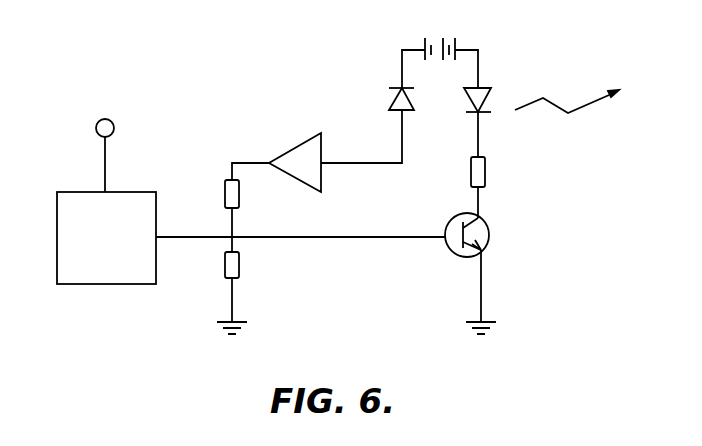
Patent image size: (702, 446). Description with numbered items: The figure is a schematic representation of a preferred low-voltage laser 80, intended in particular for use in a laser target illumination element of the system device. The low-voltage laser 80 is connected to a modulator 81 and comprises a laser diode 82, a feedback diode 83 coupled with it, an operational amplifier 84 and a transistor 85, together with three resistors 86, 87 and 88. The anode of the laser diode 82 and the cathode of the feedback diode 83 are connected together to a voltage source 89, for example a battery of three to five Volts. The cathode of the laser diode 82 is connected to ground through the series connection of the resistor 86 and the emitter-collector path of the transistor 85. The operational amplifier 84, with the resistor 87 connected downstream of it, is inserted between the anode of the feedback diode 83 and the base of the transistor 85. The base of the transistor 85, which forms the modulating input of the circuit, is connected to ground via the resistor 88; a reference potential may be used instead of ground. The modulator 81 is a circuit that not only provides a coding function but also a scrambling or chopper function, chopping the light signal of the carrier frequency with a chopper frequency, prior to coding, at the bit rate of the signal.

The low-voltage laser 80 is at (222, 99).
The modulator 81 is at (91, 270).
The laser diode 82 is at (490, 98).
The feedback diode 83 is at (395, 105).
The operational amplifier 84 is at (300, 158).
The transistor 85 is at (489, 235).
The resistor 86 is at (481, 172).
The resistor 87 is at (223, 196).
The resistor 88 is at (239, 263).
The voltage source 89 is at (455, 38).